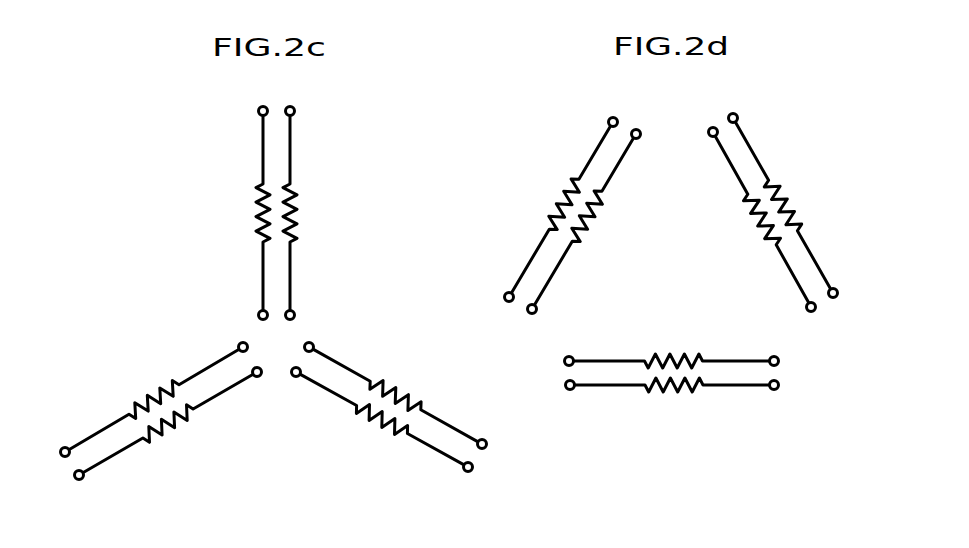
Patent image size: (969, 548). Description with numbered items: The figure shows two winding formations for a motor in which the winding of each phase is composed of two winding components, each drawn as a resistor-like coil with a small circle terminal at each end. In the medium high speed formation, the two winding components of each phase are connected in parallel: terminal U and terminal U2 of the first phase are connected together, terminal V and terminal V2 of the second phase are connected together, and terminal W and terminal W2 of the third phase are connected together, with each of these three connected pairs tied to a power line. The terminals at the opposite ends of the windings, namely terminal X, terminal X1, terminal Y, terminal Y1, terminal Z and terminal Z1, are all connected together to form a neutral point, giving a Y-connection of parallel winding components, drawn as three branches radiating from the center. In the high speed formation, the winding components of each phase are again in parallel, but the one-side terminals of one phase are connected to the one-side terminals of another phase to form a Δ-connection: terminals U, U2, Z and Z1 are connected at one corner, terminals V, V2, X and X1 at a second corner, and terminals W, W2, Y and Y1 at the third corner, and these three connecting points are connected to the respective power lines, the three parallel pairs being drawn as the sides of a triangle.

In FIG. 2c, the terminal U is at (261, 97).
In FIG. 2d, the terminal U is at (605, 109).
In FIG. 2c, the terminal U2 is at (301, 97).
In FIG. 2d, the terminal U2 is at (649, 120).
In FIG. 2c, the terminal X is at (301, 310).
In FIG. 2d, the terminal X is at (544, 317).
In FIG. 2c, the terminal X1 is at (242, 310).
In FIG. 2d, the terminal X1 is at (491, 287).
In FIG. 2c, the terminal V is at (68, 488).
In FIG. 2d, the terminal V is at (557, 393).
In FIG. 2c, the terminal V2 is at (48, 453).
In FIG. 2d, the terminal V2 is at (550, 362).
In FIG. 2c, the terminal Y is at (232, 343).
In FIG. 2d, the terminal Y is at (785, 361).
In FIG. 2c, the terminal Y1 is at (261, 389).
In FIG. 2d, the terminal Y1 is at (793, 396).
In FIG. 2c, the terminal W is at (482, 482).
In FIG. 2d, the terminal W is at (846, 285).
In FIG. 2c, the terminal W2 is at (504, 437).
In FIG. 2d, the terminal W2 is at (789, 318).
In FIG. 2c, the terminal Z is at (321, 343).
In FIG. 2d, the terminal Z is at (704, 118).
In FIG. 2c, the terminal Z1 is at (300, 389).
In FIG. 2d, the terminal Z1 is at (750, 105).